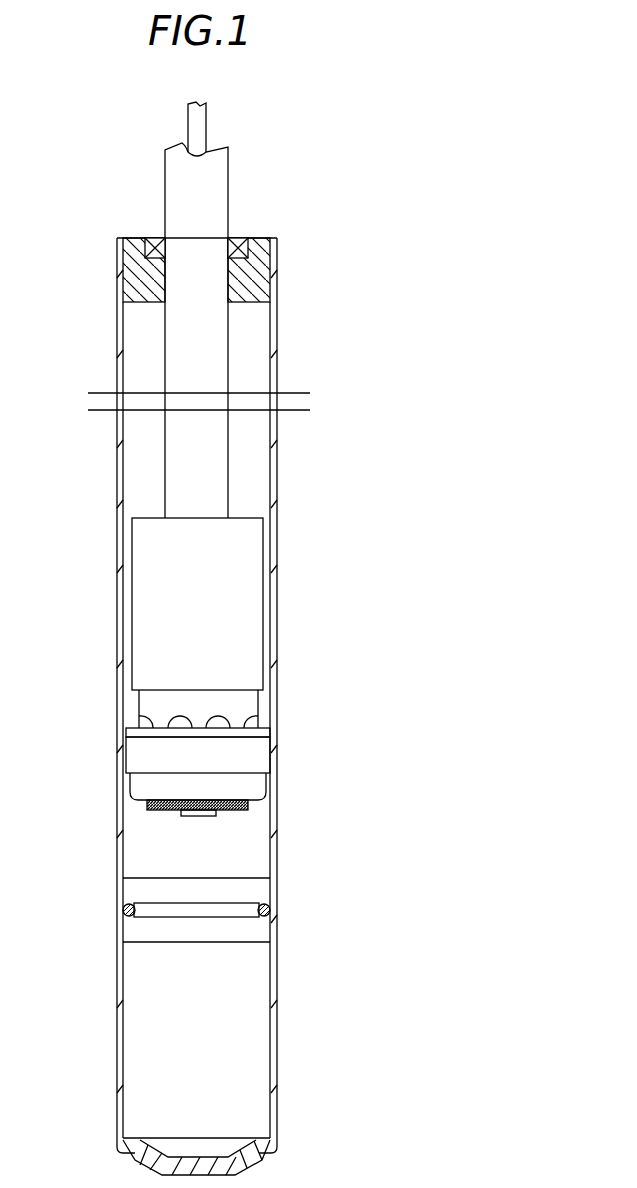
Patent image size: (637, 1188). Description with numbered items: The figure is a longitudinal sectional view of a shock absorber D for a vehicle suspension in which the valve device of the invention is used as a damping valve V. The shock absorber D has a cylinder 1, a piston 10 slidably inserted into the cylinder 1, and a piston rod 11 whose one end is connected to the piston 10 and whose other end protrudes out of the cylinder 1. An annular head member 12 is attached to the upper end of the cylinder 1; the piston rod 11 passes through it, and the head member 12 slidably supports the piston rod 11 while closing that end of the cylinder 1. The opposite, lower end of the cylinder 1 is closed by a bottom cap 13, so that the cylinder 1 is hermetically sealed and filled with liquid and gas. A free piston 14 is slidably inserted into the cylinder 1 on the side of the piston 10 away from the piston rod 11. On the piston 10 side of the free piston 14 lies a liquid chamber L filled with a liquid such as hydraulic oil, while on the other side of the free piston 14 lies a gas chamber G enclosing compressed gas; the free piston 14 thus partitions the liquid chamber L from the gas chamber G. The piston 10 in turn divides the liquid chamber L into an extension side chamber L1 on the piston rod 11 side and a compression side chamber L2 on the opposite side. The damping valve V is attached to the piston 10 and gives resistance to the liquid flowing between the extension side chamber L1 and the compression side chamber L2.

The cylinder 1 is at (274, 1020).
The piston rod 11 is at (172, 190).
The head member 12 is at (240, 305).
The piston 10 is at (260, 783).
The free piston 14 is at (131, 932).
The bottom cap 13 is at (140, 1160).
The damping valve V is at (132, 665).
The shock absorber D is at (306, 206).
The extension side chamber L1 is at (135, 466).
The liquid chamber L is at (254, 460).
The compression side chamber L2 is at (141, 841).
The gas chamber G is at (211, 1056).